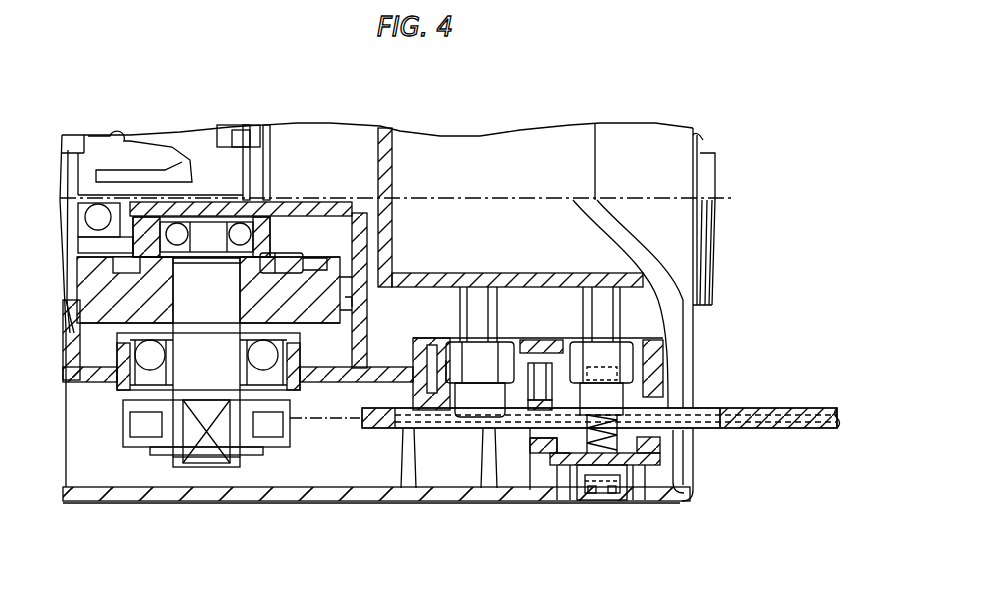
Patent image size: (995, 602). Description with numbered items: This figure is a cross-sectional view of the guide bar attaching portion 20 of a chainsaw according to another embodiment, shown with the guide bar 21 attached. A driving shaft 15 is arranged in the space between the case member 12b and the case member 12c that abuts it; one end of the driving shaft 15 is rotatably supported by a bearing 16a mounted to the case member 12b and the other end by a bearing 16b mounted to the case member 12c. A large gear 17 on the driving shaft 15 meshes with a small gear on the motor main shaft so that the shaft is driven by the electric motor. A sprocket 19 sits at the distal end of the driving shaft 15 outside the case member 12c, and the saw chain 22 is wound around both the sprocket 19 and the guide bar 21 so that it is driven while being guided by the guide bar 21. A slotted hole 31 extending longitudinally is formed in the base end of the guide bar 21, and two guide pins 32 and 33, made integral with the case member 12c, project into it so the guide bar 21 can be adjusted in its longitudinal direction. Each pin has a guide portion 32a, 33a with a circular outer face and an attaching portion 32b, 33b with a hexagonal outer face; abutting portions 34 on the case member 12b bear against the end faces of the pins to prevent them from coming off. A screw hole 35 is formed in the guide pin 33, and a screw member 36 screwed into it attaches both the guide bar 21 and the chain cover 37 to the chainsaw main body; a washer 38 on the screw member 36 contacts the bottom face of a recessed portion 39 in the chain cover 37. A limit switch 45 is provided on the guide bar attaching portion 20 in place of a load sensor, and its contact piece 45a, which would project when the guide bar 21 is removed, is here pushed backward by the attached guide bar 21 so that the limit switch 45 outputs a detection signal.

The case member 12b is at (338, 210).
The case member 12c is at (327, 377).
The driving shaft 15 is at (207, 290).
The bearing 16a is at (177, 225).
The bearing 16b is at (263, 358).
The large gear 17 is at (103, 320).
The sprocket 19 is at (143, 427).
The guide bar attaching portion 20 is at (661, 404).
The guide bar 21 is at (787, 420).
The saw chain 22 is at (350, 420).
The slotted hole 31 is at (707, 428).
The guide pin 32 is at (477, 356).
The guide portion 32a is at (470, 400).
The attaching portion 32b is at (505, 405).
The guide pin 33 is at (631, 356).
The guide portion 33a is at (603, 397).
The attaching portion 33b is at (600, 353).
The abutting portion 34 is at (458, 302).
The screw hole 35 is at (660, 385).
The screw member 36 is at (583, 490).
The chain cover 37 is at (215, 493).
The washer 38 is at (647, 470).
The recessed portion 39 is at (557, 470).
The limit switch 45 is at (543, 375).
The contact piece 45a is at (520, 445).